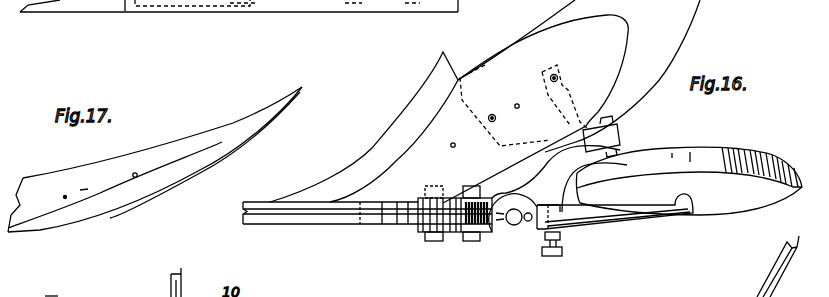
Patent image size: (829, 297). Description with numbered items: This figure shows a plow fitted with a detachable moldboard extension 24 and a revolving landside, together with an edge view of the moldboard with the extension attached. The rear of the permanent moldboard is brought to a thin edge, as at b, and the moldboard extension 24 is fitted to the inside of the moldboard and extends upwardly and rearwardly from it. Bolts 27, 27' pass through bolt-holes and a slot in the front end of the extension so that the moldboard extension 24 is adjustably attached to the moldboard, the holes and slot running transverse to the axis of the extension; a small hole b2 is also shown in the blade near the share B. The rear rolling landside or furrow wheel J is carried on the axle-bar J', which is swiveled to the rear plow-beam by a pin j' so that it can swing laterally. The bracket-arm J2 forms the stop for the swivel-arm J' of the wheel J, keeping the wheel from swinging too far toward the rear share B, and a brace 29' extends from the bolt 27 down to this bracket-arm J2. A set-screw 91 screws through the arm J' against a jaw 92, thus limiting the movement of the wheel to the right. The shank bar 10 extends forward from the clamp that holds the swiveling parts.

In FIG. 17, the rear share B is at (155, 159).
In FIG. 16, the rear share B is at (485, 101).
In FIG. 17, the detachable moldboard extension 24 is at (244, 126).
In FIG. 16, the detachable moldboard extension 24 is at (649, 5).
In FIG. 17, the bolt 27 is at (150, 167).
In FIG. 16, the bolt 27 is at (567, 61).
In FIG. 16, the bolt 27' is at (498, 102).
In FIG. 17, the thin edge b is at (120, 210).
In FIG. 16, the blade hole b2 is at (452, 143).
In FIG. 16, the shank bar 10 is at (330, 213).
In FIG. 16, the hind furrow-wheel J is at (689, 181).
In FIG. 16, the axle-bar J' is at (615, 224).
In FIG. 16, the bracket-arm J2 is at (522, 178).
In FIG. 16, the pin j' is at (512, 240).
In FIG. 16, the set-screw 91 is at (553, 257).
In FIG. 16, the jaw 92 is at (548, 208).
In FIG. 16, the brace 29' is at (591, 103).